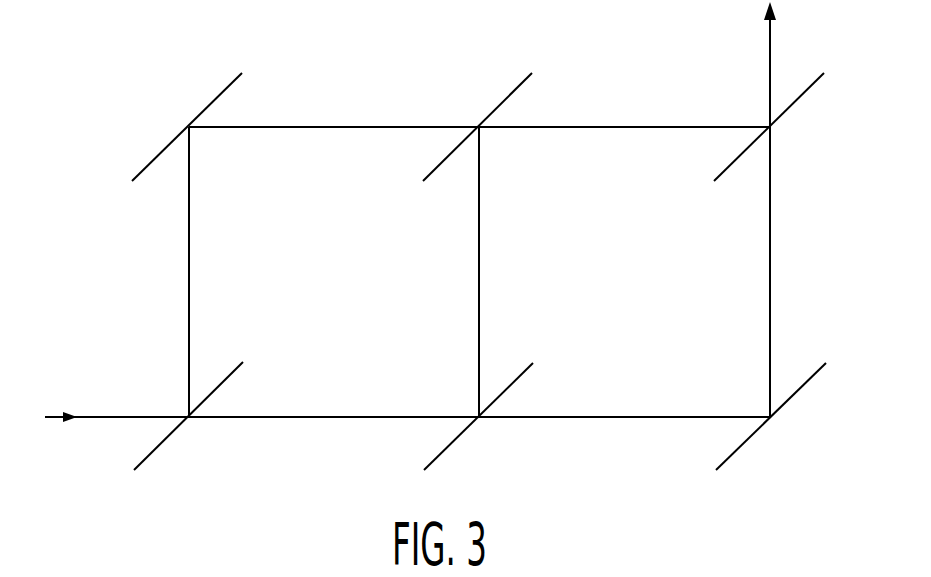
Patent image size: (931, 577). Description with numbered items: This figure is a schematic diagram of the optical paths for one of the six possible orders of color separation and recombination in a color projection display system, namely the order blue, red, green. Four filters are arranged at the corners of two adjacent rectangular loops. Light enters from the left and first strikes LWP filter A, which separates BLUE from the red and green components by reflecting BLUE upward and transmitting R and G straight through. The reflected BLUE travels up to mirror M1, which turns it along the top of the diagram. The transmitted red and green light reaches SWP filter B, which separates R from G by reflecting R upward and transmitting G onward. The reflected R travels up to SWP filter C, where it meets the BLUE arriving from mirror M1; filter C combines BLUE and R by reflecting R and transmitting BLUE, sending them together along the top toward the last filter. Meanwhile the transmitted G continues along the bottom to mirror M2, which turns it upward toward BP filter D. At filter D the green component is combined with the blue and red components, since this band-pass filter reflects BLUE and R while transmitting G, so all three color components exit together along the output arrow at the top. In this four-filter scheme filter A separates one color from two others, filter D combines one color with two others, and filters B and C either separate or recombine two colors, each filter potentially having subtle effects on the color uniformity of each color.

The mirror M1 is at (187, 123).
The mirror M2 is at (771, 416).
The LWP filter A is at (188, 417).
The SWP filter B is at (478, 417).
The SWP filter C is at (489, 127).
The BP filter D is at (773, 127).
The blue color component BLUE is at (221, 272).
The red color component R is at (503, 272).
The green color component G is at (793, 272).